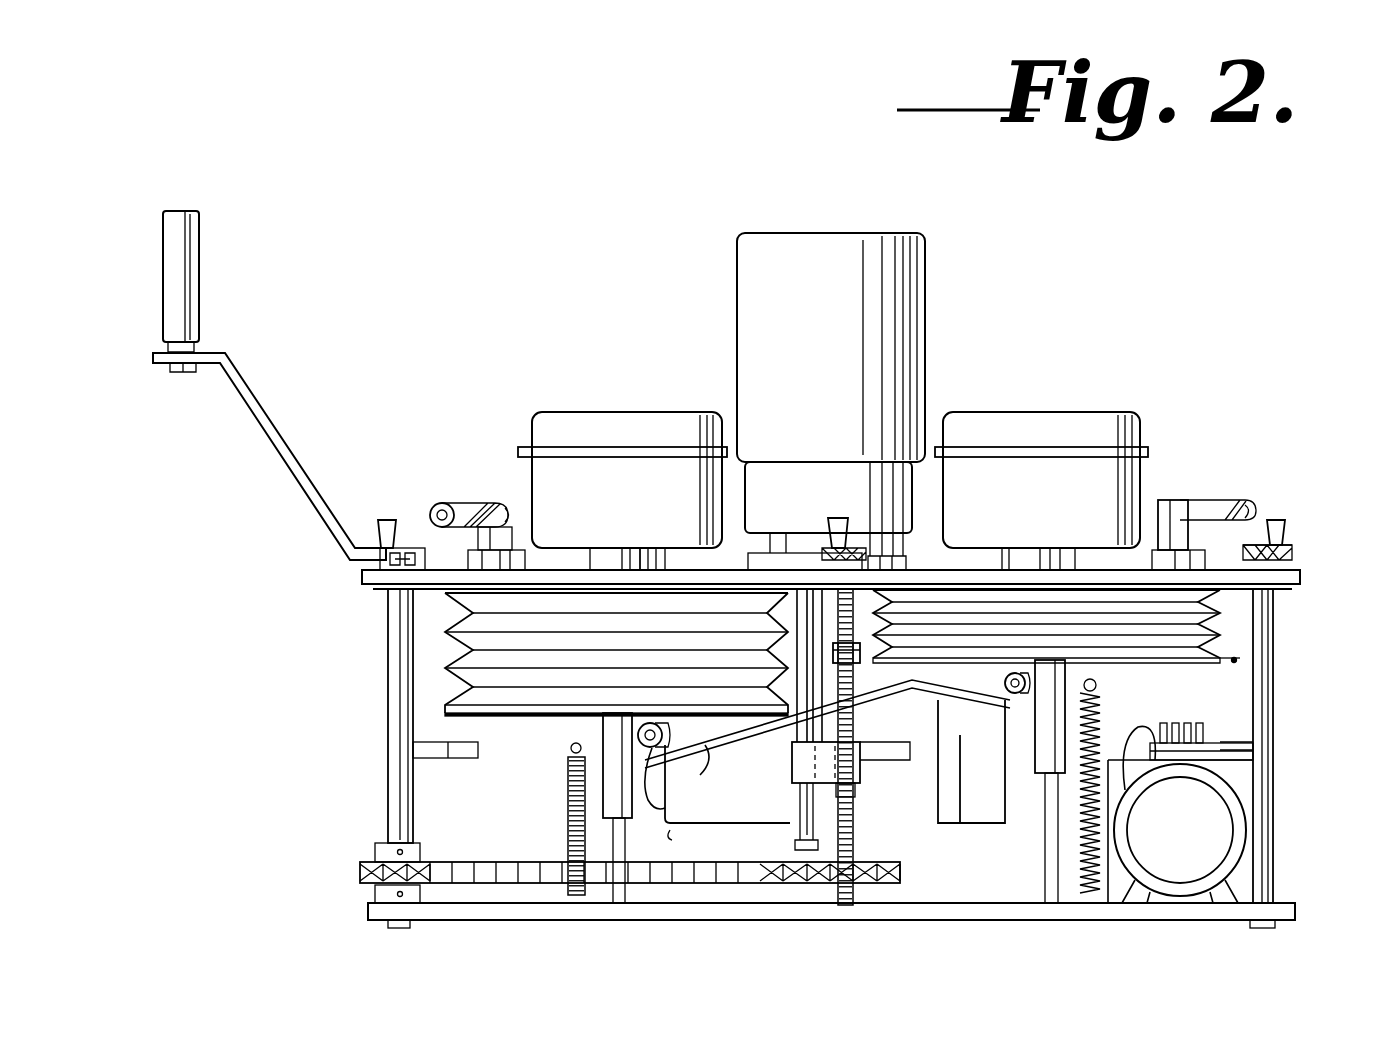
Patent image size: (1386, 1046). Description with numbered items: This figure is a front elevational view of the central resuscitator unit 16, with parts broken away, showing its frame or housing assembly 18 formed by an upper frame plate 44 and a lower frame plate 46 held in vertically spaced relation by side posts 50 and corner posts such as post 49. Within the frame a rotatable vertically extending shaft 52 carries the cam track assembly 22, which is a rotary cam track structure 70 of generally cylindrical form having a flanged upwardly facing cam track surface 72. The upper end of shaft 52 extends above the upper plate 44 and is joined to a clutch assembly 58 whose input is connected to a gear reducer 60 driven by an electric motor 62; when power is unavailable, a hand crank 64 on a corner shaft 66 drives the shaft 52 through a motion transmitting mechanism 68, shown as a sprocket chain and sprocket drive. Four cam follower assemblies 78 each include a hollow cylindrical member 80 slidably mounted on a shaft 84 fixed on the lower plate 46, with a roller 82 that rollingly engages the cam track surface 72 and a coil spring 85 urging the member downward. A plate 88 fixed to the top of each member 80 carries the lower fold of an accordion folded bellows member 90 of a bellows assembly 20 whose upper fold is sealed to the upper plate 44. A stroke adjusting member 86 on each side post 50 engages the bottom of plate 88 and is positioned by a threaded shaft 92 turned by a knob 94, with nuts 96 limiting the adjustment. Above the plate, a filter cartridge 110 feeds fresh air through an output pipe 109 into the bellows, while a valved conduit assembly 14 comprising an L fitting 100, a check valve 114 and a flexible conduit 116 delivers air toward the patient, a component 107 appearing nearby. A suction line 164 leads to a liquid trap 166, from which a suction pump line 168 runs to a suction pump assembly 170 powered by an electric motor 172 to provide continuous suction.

The valved conduit assembly 14 is at (475, 487).
The central resuscitator unit 16 is at (1236, 660).
The frame or housing assembly 18 is at (344, 583).
The bellows assembly 20 is at (432, 641).
The cam track assembly 22 is at (969, 838).
The upper frame plate 44 is at (376, 592).
The lower frame plate 46 is at (372, 912).
The right post 49 is at (1275, 708).
The side post 50 is at (800, 808).
The rotatable vertically extending shaft 52 is at (833, 692).
The clutch assembly 58 is at (920, 540).
The gear reducer 60 is at (915, 492).
The electric motor 62 is at (926, 312).
The hand crank 64 is at (200, 297).
The corner shaft 66 is at (400, 735).
The motion transmitting mechanism 68 is at (510, 826).
The rotary cam track structure 70 is at (676, 836).
The cam track surface 72 is at (689, 777).
The cam follower assembly 78 is at (592, 730).
The hollow cylindrical member 80 is at (615, 795).
The roller 82 is at (665, 806).
The shaft 84 is at (605, 848).
The coil spring 85 is at (566, 768).
The stroke adjusting member 86 is at (470, 758).
The plate 88 is at (440, 712).
The bellows member 90 is at (590, 572).
The shaft 92 is at (858, 846).
The knob 94 is at (414, 522).
The nut 96 is at (857, 668).
The L fitting 100 is at (502, 492).
The right station 107 is at (1296, 430).
The output pipe 109 is at (655, 565).
The filter cartridge 110 is at (622, 418).
The check valve 114 is at (488, 518).
The flexible conduit 116 is at (440, 500).
The suction line 164 is at (1245, 768).
The liquid trap 166 is at (1240, 790).
The suction pump line 168 is at (1138, 812).
The suction pump assembly 170 is at (1250, 855).
The electric motor 172 is at (1218, 826).